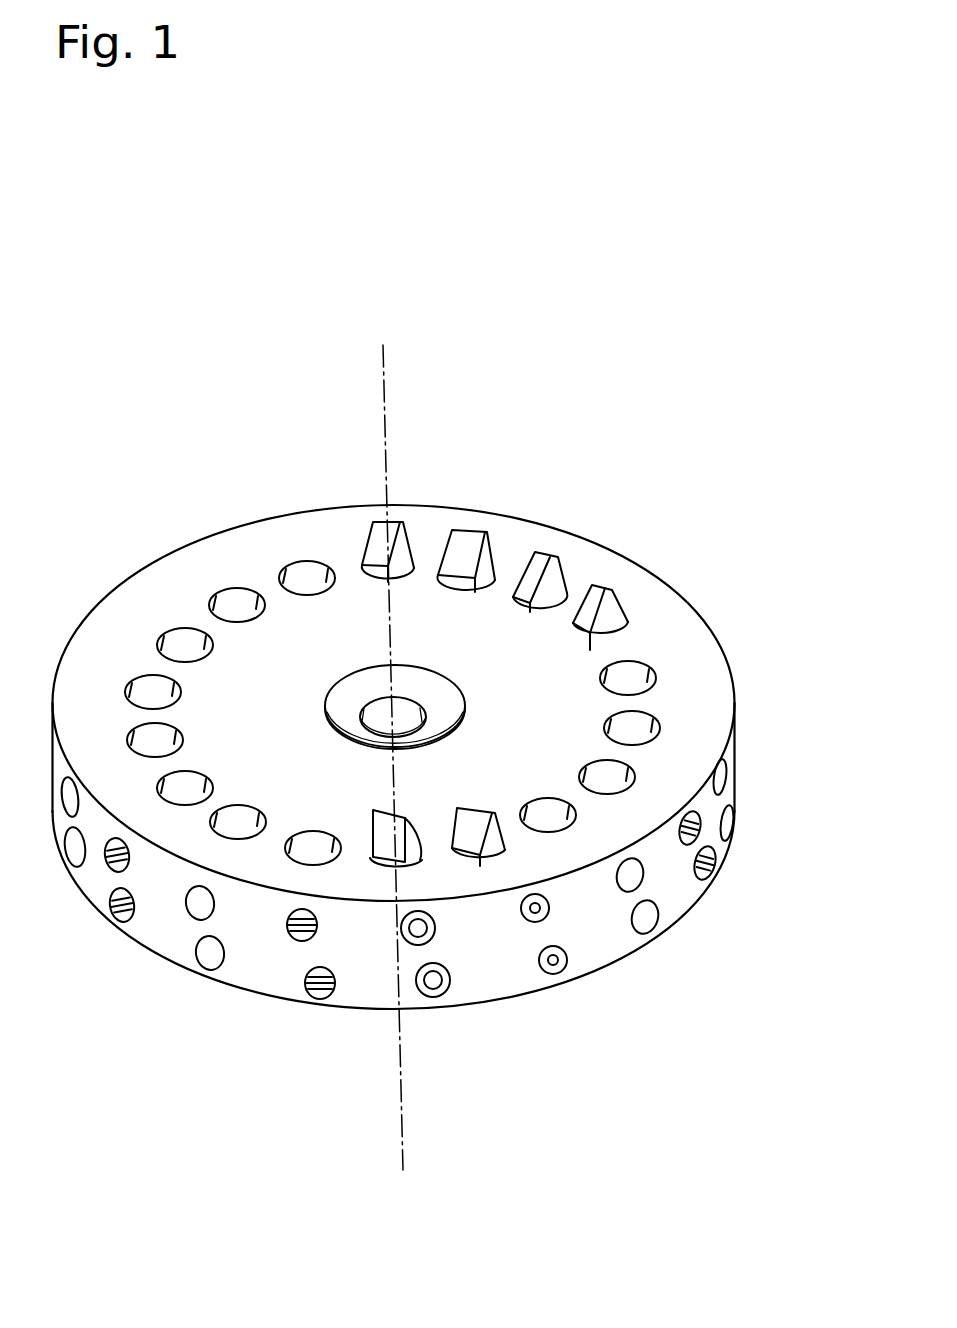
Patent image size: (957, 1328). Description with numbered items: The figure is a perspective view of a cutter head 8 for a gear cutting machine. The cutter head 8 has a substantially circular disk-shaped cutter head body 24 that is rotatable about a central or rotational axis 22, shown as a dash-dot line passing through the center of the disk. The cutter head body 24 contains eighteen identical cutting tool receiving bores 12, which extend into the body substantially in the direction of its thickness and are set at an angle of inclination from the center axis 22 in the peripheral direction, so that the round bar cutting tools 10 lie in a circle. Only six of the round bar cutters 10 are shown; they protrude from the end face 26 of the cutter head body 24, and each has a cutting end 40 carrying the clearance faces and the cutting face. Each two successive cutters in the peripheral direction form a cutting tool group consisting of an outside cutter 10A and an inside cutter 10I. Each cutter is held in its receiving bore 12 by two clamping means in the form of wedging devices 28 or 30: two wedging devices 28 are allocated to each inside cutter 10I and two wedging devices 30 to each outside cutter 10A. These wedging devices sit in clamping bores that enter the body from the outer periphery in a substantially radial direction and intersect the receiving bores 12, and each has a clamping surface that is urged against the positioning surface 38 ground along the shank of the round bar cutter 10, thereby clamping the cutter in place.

The cutter head 8 is at (236, 496).
The round bar cutting tool 10 is at (358, 530).
The outside cutter 10A is at (387, 853).
The inside cutter 10I is at (480, 840).
The cutting tool receiving bore 12 is at (183, 638).
The central axis 22 is at (385, 383).
The cutter head body 24 is at (736, 780).
The end face 26 is at (680, 640).
The wedging device 28 is at (408, 942).
The wedging device 30 is at (548, 914).
The positioning surface 38 is at (615, 607).
The cutting end 40 is at (548, 555).